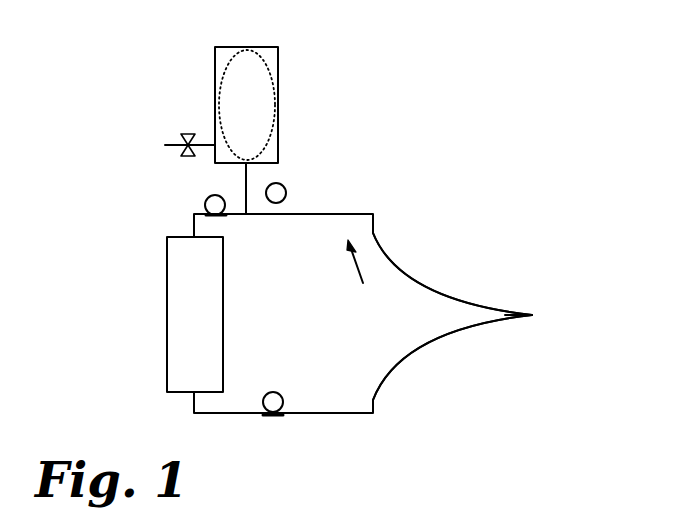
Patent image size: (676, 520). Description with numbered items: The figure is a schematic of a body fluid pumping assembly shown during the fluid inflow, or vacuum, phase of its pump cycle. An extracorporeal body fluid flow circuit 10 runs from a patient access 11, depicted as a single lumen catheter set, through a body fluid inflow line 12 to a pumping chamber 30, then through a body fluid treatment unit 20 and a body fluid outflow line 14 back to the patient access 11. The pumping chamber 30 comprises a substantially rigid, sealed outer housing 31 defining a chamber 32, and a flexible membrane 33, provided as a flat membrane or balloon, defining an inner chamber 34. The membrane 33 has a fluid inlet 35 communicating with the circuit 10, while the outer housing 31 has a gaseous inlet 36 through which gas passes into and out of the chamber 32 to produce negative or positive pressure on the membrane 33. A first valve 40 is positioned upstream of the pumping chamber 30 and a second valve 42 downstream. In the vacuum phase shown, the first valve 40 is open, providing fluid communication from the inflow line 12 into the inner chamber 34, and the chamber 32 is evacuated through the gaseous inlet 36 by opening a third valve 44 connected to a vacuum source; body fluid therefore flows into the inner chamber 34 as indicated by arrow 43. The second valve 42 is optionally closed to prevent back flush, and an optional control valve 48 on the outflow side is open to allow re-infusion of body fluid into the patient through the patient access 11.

The extracorporeal body fluid flow circuit 10 is at (462, 143).
The patient access 11 is at (525, 313).
The body fluid inflow line 12 is at (408, 272).
The body fluid outflow line 14 is at (413, 350).
The body fluid treatment unit 20 is at (167, 281).
The pumping chamber 30 is at (278, 65).
The outer housing 31 is at (278, 97).
The chamber 32 is at (275, 148).
The flexible membrane 33 is at (225, 63).
The inner chamber 34 is at (232, 100).
The fluid inlet 35 is at (243, 183).
The gaseous inlet 36 is at (172, 147).
The first valve 40 is at (285, 203).
The second valve 42 is at (203, 200).
The arrow 43 is at (363, 283).
The third valve 44 is at (182, 134).
The control valve 48 is at (270, 418).